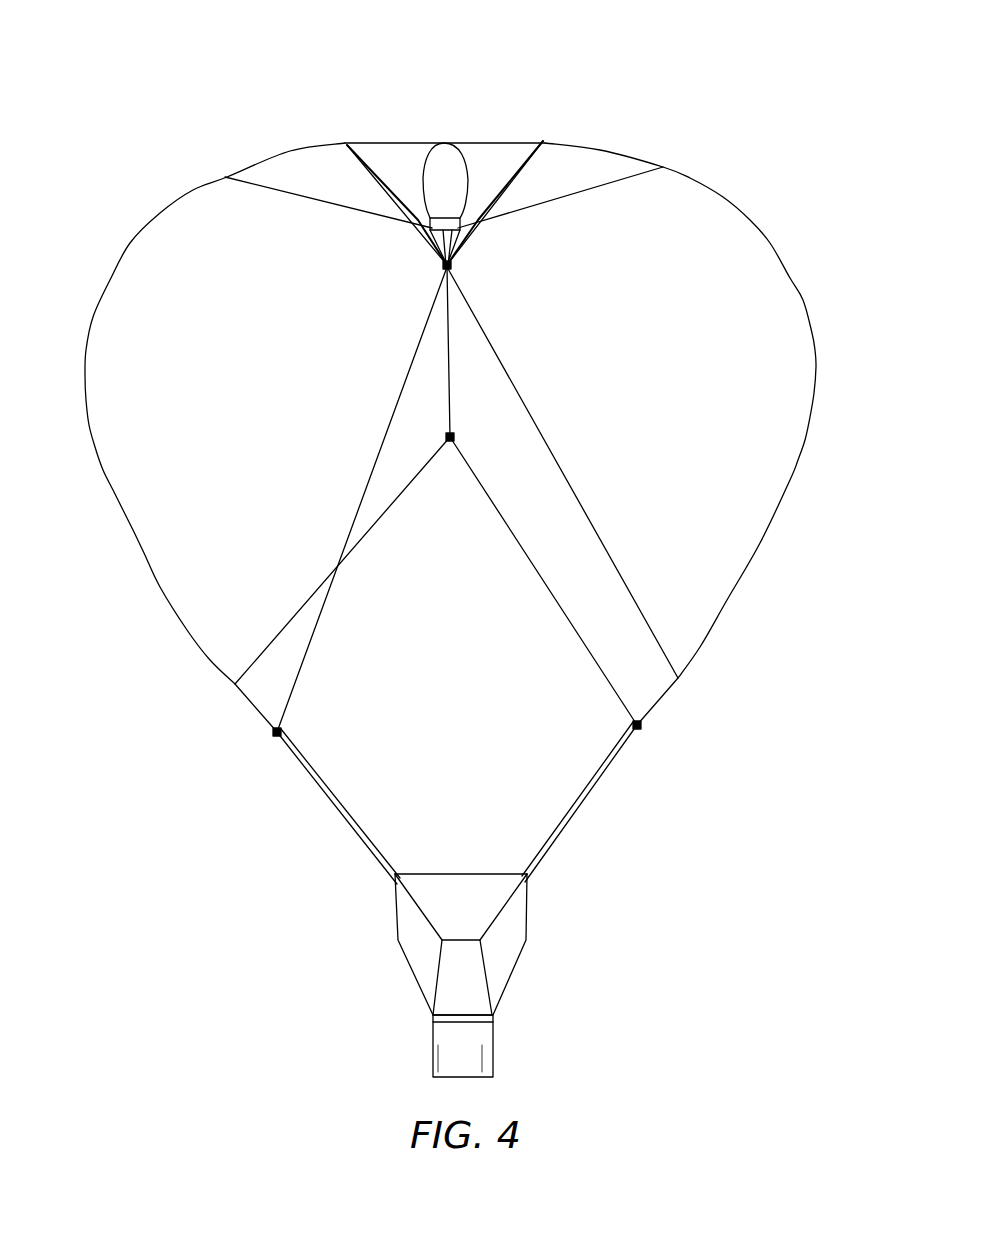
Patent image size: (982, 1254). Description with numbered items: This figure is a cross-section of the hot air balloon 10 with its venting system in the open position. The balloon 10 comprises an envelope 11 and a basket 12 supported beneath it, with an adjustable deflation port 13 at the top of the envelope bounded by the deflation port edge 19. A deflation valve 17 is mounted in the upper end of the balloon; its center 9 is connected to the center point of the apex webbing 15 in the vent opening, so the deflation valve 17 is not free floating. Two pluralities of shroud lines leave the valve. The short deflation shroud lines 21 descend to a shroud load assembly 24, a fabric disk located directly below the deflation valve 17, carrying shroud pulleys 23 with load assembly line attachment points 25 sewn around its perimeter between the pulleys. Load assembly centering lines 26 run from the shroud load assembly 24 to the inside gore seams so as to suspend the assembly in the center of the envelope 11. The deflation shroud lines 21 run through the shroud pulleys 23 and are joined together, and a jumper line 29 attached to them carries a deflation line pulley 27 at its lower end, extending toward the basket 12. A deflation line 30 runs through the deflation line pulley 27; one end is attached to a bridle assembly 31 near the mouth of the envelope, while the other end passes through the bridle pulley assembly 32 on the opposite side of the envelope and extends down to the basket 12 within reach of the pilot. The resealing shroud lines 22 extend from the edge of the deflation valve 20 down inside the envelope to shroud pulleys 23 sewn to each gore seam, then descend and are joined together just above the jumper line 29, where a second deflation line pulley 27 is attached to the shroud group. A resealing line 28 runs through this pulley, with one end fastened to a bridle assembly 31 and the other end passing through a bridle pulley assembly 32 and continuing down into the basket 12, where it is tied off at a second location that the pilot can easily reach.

The balloon 10 is at (716, 72).
The envelope 11 is at (195, 190).
The basket 12 is at (495, 1048).
The deflation port 13 is at (508, 113).
The apex webbing 15 is at (418, 140).
The center of deflation valve 9 is at (445, 140).
The deflation valve 17 is at (422, 200).
The deflation port edge 19 is at (357, 141).
The edge of the deflation valve 20 is at (430, 231).
The deflation shroud line 21 is at (460, 240).
The resealing shroud line 22 is at (492, 193).
The shroud pulley 23 is at (546, 143).
The shroud load assembly 24 is at (420, 247).
The load assembly line attachment points 25 is at (661, 170).
The load assembly centering line 26 is at (288, 195).
The deflation line pulley 27 is at (440, 272).
The resealing line 28 is at (378, 440).
The jumper line 29 is at (450, 395).
The deflation line 30 is at (290, 627).
The bridle assembly 31 is at (232, 688).
The bridle pulley assembly 32 is at (283, 728).